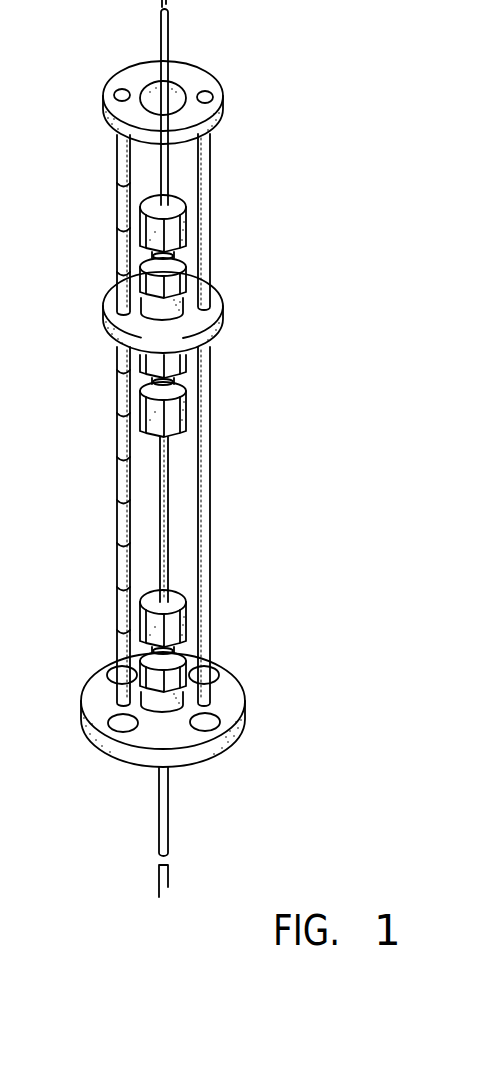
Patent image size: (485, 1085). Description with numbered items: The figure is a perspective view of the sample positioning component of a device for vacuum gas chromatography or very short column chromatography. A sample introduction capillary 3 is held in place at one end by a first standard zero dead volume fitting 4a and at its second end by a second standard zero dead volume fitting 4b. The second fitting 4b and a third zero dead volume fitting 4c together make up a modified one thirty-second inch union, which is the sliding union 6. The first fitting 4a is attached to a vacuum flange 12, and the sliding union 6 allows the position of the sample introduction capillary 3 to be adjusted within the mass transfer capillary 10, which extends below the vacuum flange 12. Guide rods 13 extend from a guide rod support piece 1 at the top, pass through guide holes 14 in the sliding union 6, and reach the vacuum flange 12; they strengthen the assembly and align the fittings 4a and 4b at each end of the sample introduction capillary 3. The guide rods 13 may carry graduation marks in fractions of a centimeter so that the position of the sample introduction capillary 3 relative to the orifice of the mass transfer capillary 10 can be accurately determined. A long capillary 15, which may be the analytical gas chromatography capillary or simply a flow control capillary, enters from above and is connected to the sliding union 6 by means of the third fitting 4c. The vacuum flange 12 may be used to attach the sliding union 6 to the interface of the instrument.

The guide rod support piece 1 is at (223, 105).
The sample introduction capillary 3 is at (167, 563).
The first standard zero dead volume fitting 4a is at (187, 667).
The second standard zero dead volume fitting 4b is at (183, 418).
The third zero dead volume fitting 4c is at (185, 242).
The sliding union 6 is at (220, 327).
The mass transfer capillary 10 is at (167, 795).
The vacuum flange 12 is at (240, 722).
The guide rods 13 is at (208, 510).
The guide holes 14 is at (208, 303).
The long capillary 15 is at (168, 40).